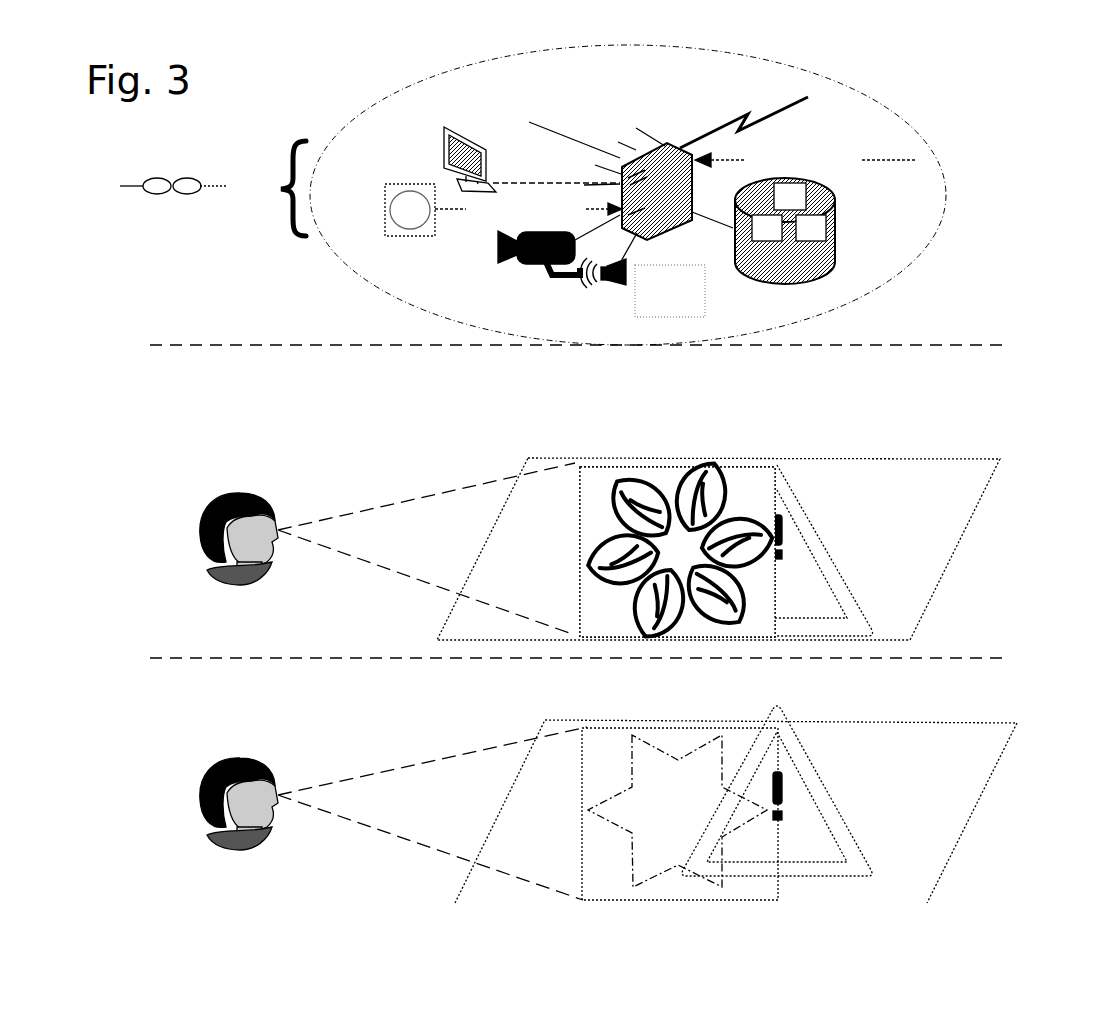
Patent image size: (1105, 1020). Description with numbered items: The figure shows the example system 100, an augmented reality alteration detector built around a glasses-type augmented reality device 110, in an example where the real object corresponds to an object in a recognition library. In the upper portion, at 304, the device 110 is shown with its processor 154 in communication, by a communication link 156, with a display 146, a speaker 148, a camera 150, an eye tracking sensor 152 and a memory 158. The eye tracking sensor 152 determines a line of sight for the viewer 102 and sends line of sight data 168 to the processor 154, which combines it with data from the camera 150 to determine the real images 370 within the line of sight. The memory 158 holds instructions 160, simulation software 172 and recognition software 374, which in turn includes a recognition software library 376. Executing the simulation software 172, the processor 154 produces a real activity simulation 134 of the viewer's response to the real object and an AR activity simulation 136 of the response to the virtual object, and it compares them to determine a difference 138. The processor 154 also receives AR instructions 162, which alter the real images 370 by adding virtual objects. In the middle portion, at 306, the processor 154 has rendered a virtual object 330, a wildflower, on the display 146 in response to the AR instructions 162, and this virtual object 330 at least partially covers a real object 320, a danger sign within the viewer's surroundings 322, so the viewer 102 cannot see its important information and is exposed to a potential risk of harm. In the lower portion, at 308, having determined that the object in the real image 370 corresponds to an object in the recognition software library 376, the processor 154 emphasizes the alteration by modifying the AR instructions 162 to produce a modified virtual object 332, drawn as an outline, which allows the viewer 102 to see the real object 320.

The system 100 is at (318, 84).
The augmented reality device 110 is at (268, 788).
The memory detail view 304 is at (955, 185).
The real activity simulation 134 is at (541, 93).
The difference 138 is at (453, 92).
The AR activity simulation 136 is at (517, 132).
The display 146 is at (444, 160).
The eye tracking sensor 152 is at (408, 236).
The line of sight data 168 is at (478, 226).
The camera 150 is at (526, 262).
The speaker 148 is at (615, 285).
The real images 370 is at (653, 233).
The processor 154 is at (690, 221).
The communication link 156 is at (725, 123).
The AR instructions 162 is at (810, 168).
The simulation software 172 is at (767, 232).
The recognition software 374 is at (840, 202).
The recognition software library 376 is at (787, 195).
The instructions 160 is at (807, 225).
The memory 158 is at (799, 248).
The virtual object rendering view 306 is at (1007, 418).
The viewer 102 is at (243, 588).
The real-world scene 322 is at (935, 607).
The real object 320 is at (807, 525).
The virtual object 330 is at (693, 490).
The modified virtual object view 308 is at (1000, 797).
The modified virtual object 332 is at (677, 785).